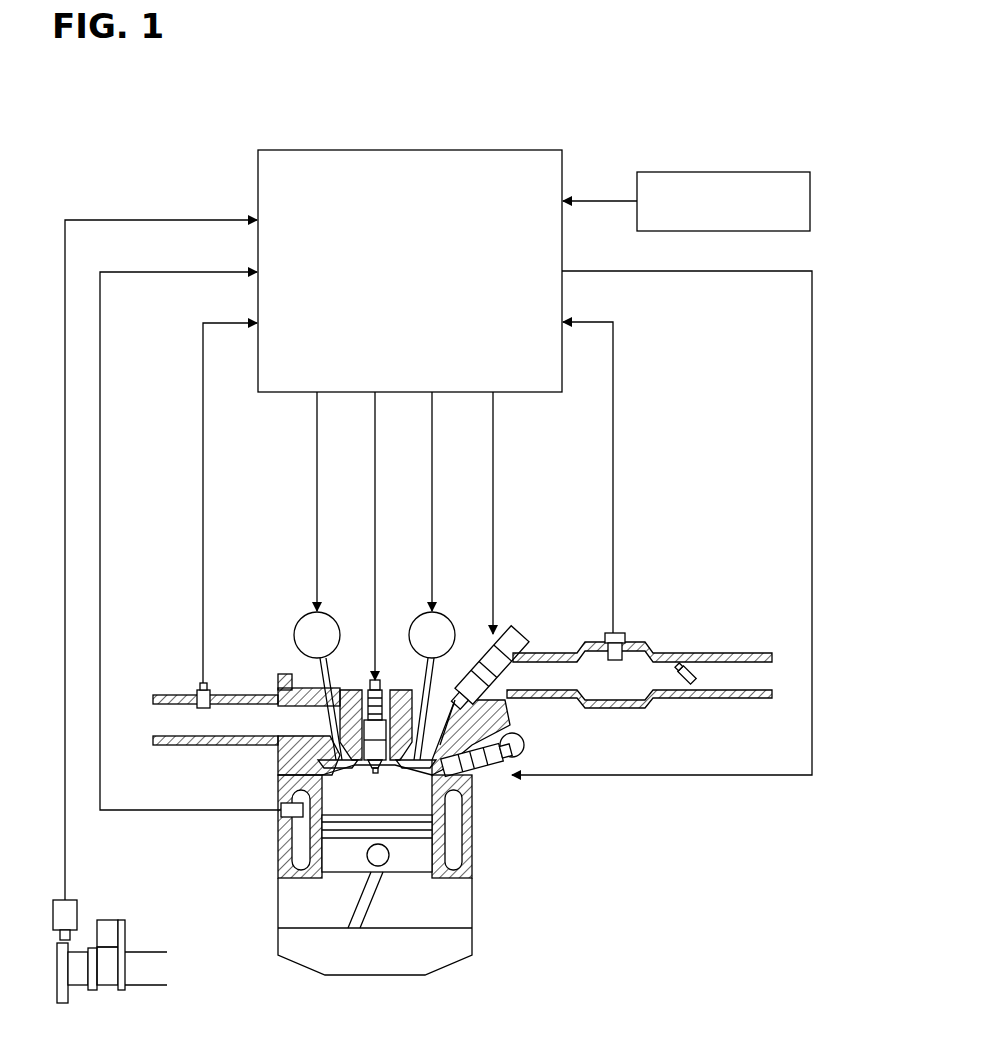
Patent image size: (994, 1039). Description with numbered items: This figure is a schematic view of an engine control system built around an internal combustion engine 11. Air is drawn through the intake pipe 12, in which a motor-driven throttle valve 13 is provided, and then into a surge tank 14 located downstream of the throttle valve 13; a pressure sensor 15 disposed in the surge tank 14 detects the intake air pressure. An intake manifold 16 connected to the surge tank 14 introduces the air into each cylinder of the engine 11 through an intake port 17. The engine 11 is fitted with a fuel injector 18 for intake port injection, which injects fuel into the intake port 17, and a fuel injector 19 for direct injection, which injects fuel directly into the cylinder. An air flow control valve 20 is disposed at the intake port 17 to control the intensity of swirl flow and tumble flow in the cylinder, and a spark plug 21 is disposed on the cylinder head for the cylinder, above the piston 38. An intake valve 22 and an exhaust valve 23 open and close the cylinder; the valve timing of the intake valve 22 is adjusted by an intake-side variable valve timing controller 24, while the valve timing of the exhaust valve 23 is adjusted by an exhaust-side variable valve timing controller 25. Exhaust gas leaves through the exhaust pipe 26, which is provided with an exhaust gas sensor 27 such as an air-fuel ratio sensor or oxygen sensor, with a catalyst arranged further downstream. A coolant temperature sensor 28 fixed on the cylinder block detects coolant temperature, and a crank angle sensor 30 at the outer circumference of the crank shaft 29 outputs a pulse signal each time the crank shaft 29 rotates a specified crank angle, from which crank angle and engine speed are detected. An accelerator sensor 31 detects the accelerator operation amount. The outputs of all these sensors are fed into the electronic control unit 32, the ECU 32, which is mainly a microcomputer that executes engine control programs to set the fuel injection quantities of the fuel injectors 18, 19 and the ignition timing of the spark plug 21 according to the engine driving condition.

The internal combustion engine 11 is at (520, 600).
The intake pipe 12 is at (728, 652).
The throttle valve 13 is at (696, 682).
The surge tank 14 is at (612, 709).
The pressure sensor 15 is at (618, 632).
The intake manifold 16 is at (560, 652).
The intake port 17 is at (528, 700).
The fuel injector for intake port injection 18 is at (482, 636).
The fuel injector for direct injection 19 is at (486, 772).
The air flow control valve 20 is at (468, 648).
The spark plug 21 is at (366, 690).
The intake valve 22 is at (402, 790).
The exhaust valve 23 is at (284, 777).
The intake-side variable valve timing controller 24 is at (412, 618).
The exhaust-side variable valve timing controller 25 is at (303, 618).
The exhaust pipe 26 is at (250, 693).
The exhaust gas sensor 27 is at (199, 685).
The coolant temperature sensor 28 is at (283, 817).
The crank shaft 29 is at (148, 950).
The crank angle sensor 30 is at (78, 898).
The accelerator sensor 31 is at (750, 172).
The electronic control unit (ECU) 32 is at (478, 150).
The piston 38 is at (348, 815).